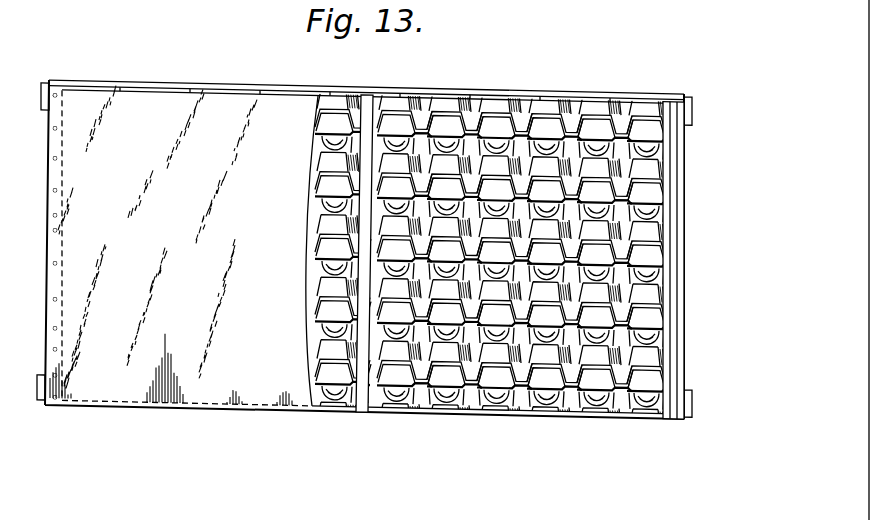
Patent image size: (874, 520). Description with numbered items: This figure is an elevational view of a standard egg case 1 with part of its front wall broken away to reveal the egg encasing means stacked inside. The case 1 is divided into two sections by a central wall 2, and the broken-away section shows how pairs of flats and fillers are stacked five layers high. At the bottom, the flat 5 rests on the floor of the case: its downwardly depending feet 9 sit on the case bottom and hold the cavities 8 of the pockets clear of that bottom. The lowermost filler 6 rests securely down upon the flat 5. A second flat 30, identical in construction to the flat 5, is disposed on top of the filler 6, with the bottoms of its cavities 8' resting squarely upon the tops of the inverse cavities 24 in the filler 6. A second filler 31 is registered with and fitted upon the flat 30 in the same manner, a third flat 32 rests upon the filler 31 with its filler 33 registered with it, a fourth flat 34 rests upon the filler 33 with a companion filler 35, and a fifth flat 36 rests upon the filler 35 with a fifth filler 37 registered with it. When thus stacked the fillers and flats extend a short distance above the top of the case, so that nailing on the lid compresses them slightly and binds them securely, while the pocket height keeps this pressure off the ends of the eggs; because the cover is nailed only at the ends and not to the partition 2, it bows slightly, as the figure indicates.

The egg case 1 is at (135, 378).
The central wall 2 is at (363, 393).
The flat 5 is at (345, 398).
The filler 6 is at (300, 386).
The cavities 8 is at (457, 433).
The cavities 8' is at (414, 397).
The feet 9 is at (405, 392).
The inverse cavities 24 is at (313, 351).
The second flat 30 is at (315, 326).
The second filler 31 is at (315, 277).
The third flat 32 is at (315, 263).
The filler 33 is at (320, 232).
The fourth flat 34 is at (320, 201).
The companion filler 35 is at (320, 175).
The fifth flat 36 is at (320, 144).
The fifth filler 37 is at (320, 112).